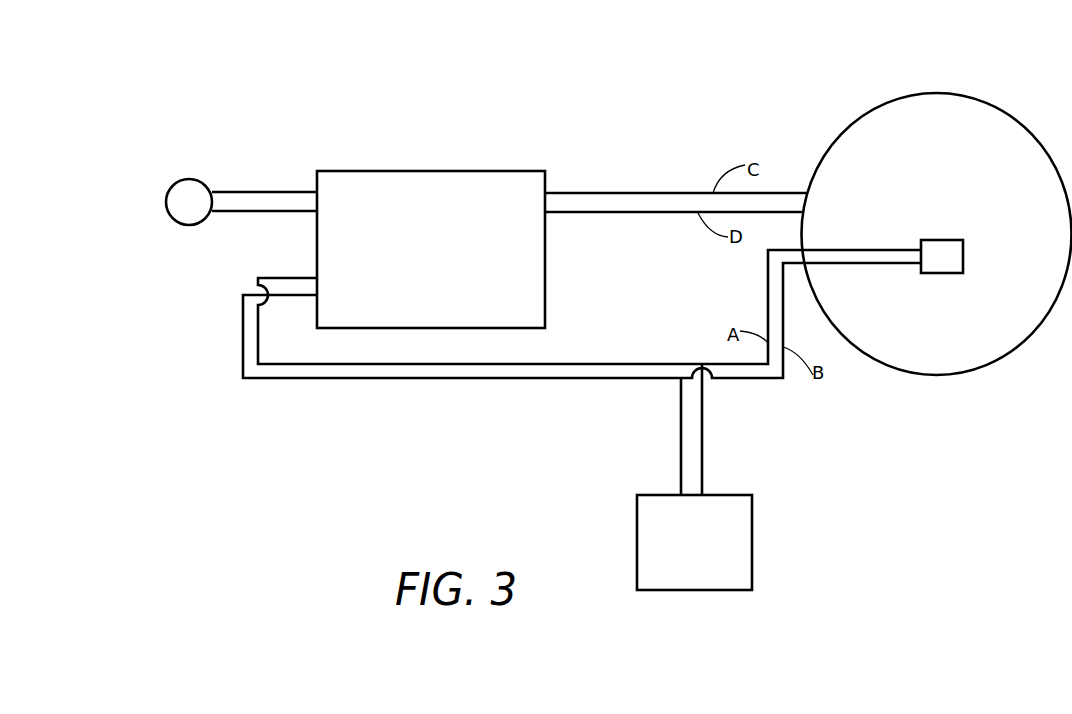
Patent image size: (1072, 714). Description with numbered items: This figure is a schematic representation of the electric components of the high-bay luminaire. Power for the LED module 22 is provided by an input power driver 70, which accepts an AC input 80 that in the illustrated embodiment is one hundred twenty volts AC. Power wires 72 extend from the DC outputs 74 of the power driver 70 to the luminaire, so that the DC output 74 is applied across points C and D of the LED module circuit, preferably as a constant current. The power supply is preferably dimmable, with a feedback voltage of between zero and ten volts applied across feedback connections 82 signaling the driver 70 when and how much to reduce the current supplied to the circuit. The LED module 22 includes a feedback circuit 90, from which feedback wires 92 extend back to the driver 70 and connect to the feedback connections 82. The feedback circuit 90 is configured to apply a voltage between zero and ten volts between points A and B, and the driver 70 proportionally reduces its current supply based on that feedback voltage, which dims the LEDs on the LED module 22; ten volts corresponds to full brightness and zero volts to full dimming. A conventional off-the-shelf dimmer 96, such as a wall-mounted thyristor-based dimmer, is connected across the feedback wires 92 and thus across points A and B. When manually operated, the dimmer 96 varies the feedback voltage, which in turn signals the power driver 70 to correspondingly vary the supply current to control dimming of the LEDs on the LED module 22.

The LED module 22 is at (911, 80).
The input power driver 70 is at (427, 197).
The power wires 72 is at (607, 212).
The DC outputs 74 is at (560, 228).
The AC input 80 is at (192, 179).
The feedback connections 82 is at (291, 263).
The feedback circuit 90 is at (942, 260).
The feedback wires 92 is at (405, 363).
The dimmer 96 is at (717, 537).